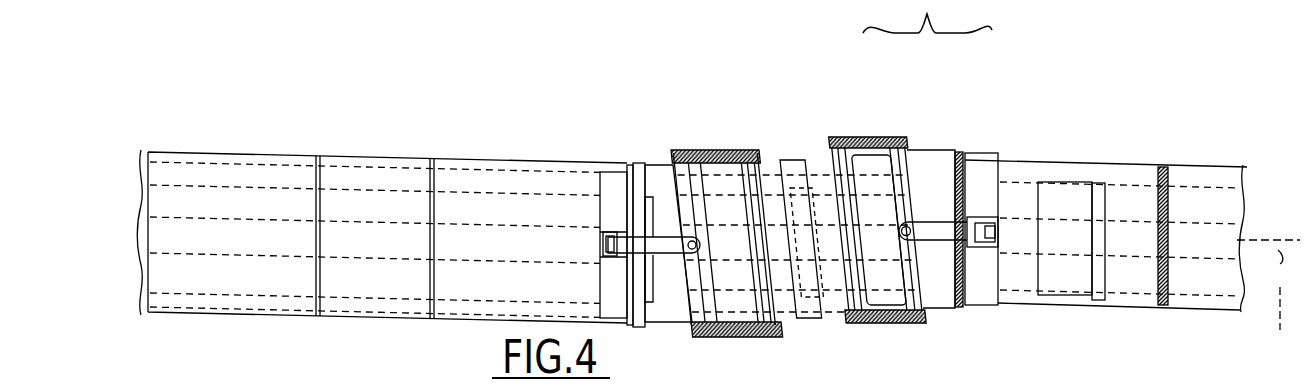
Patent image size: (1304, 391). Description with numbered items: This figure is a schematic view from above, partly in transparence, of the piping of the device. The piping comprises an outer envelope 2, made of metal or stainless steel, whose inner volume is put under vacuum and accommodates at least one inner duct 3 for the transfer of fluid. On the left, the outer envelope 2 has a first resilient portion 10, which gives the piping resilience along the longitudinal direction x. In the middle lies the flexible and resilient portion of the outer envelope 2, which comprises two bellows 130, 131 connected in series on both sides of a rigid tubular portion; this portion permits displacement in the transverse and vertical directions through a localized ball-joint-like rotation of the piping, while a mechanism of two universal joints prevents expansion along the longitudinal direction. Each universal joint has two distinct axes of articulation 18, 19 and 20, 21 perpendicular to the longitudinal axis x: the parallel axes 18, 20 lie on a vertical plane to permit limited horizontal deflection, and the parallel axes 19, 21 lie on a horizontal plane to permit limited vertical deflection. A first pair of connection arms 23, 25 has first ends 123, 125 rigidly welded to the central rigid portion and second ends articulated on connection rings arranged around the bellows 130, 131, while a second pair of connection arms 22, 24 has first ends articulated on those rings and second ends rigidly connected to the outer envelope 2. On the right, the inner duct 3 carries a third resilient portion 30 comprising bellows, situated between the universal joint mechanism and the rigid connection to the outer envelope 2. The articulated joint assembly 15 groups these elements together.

The first resilient portion 10 is at (356, 155).
The connection arm 24 is at (603, 246).
The axis of articulation 20 is at (672, 237).
The axis of articulation 21 is at (705, 152).
The connection arm 25 is at (728, 150).
The first end of connection arm 125 is at (785, 143).
The first end of connection arm 123 is at (813, 138).
The connection arm 23 is at (862, 134).
The axis of articulation 19 is at (893, 137).
The axis of articulation 18 is at (908, 228).
The connection arm 22 is at (935, 230).
The bellows 130 is at (791, 204).
The bellows 131 is at (889, 205).
The articulated joint 15 is at (828, 191).
The third resilient portion 30 is at (1072, 192).
The outer envelope 2 is at (1108, 160).
The inner duct 3 is at (1210, 240).